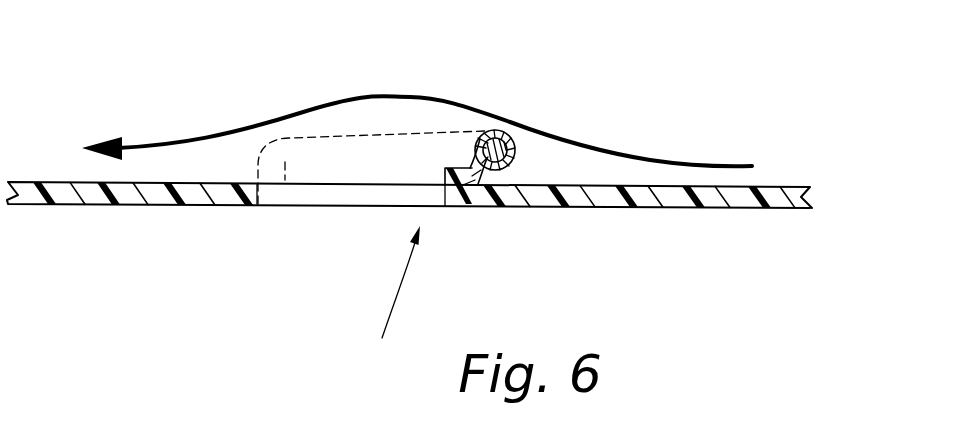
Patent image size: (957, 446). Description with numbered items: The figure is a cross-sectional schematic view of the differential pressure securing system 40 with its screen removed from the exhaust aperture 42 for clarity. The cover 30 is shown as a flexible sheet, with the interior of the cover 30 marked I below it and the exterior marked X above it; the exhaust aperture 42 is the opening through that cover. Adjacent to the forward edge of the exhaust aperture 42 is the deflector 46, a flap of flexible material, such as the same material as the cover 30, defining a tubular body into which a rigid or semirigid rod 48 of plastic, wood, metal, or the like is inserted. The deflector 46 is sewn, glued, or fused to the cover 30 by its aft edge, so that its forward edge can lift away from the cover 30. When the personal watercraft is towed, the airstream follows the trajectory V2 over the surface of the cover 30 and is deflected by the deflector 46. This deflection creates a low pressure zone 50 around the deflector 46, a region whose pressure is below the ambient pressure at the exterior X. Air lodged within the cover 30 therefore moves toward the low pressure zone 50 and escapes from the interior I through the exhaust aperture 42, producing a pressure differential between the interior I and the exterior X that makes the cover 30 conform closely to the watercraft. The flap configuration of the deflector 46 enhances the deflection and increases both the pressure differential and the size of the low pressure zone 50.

The cover 30 is at (705, 196).
The differential pressure securing system 40 is at (390, 300).
The exhaust aperture 42 is at (320, 190).
The deflector 46 is at (510, 152).
The rod 48 is at (492, 130).
The low pressure zone 50 is at (258, 205).
The trajectory of the airstream V2 is at (598, 147).
The exterior X is at (88, 95).
The interior I is at (91, 282).